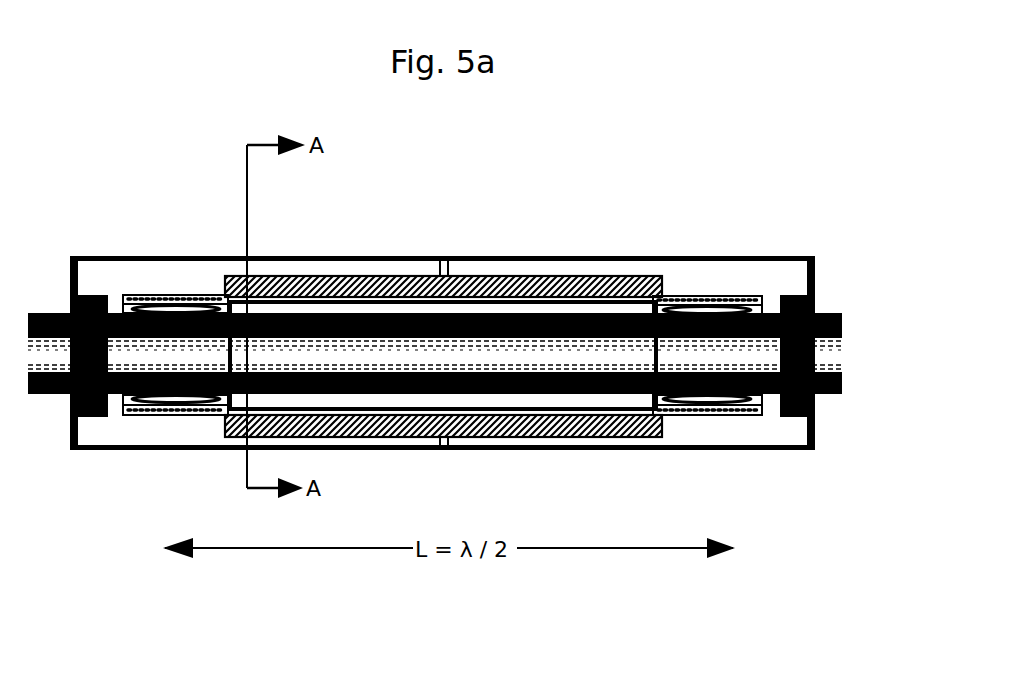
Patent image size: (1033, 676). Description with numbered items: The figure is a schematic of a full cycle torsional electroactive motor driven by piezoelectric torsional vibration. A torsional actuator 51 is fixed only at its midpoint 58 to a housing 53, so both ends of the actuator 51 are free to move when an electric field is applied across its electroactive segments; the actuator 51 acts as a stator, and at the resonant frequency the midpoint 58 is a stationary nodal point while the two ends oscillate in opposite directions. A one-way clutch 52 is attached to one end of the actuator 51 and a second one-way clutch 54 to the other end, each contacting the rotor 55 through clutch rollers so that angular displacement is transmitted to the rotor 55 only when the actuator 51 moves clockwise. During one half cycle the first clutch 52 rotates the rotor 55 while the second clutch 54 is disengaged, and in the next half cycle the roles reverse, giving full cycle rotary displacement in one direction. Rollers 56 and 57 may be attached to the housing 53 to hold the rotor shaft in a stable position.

The torsional actuator 51 is at (355, 256).
The one-way clutch 52 is at (690, 256).
The housing 53 is at (565, 256).
The second one-way clutch 54 is at (163, 256).
The rotor 55 is at (271, 256).
The roller 56 is at (92, 256).
The roller 57 is at (794, 256).
The midpoint 58 is at (445, 256).